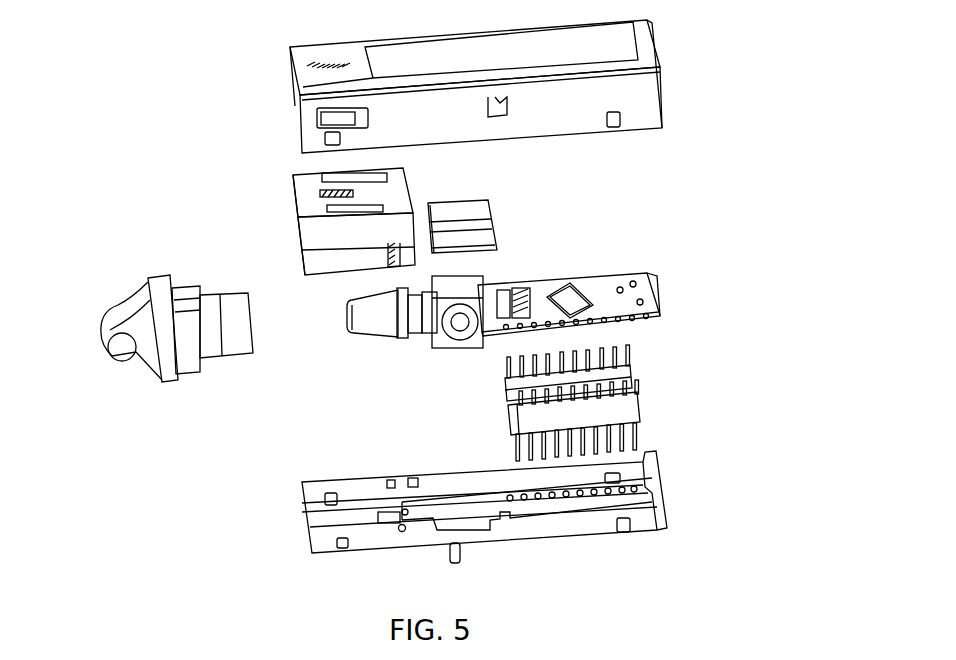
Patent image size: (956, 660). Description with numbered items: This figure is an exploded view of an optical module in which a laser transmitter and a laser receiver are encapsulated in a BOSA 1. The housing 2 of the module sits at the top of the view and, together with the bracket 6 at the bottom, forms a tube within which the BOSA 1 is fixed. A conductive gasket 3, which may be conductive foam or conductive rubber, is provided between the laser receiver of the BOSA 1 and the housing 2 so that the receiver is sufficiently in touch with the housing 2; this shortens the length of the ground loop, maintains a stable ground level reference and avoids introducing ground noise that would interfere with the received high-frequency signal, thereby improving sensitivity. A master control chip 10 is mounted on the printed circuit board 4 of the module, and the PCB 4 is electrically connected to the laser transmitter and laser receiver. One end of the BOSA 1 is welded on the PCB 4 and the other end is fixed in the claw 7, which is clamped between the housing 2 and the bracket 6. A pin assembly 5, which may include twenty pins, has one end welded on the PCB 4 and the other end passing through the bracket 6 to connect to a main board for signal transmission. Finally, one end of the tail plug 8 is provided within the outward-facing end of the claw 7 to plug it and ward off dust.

The BOSA 1 is at (380, 318).
The housing 2 is at (603, 40).
The conductive gasket 3 is at (480, 208).
The printed circuit board 4 is at (640, 288).
The pin assembly 5 is at (628, 418).
The bracket 6 is at (647, 493).
The claw 7 is at (305, 208).
The tail plug 8 is at (230, 307).
The master control chip 10 is at (570, 298).